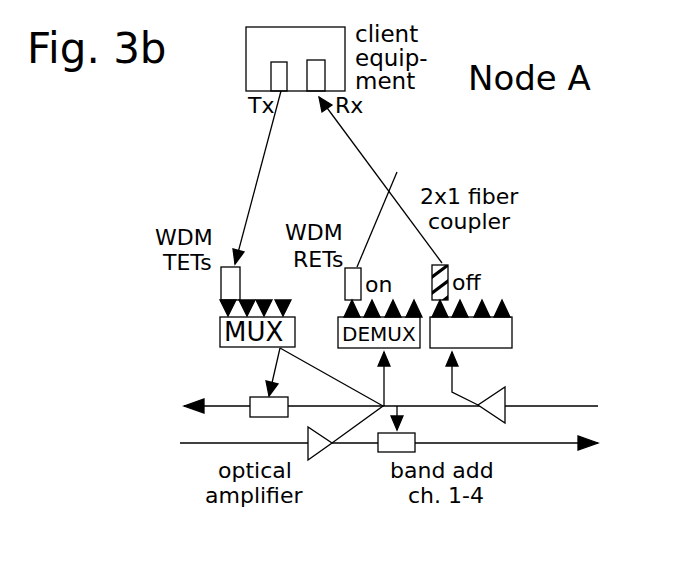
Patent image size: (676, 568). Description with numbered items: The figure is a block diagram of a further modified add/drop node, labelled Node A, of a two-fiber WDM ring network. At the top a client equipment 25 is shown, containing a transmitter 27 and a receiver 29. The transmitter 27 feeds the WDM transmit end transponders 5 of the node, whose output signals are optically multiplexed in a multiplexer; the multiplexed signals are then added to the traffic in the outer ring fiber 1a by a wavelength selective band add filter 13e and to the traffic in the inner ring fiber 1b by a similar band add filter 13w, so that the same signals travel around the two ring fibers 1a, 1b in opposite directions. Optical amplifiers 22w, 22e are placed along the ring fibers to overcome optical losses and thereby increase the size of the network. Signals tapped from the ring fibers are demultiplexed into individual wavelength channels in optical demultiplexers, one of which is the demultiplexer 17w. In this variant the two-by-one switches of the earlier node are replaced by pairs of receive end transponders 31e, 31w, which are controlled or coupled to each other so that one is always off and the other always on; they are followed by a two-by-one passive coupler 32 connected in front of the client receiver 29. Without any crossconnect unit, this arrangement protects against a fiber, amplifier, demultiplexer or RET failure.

The client equipment 25 is at (248, 83).
The transmitter 27 is at (284, 98).
The receiver 29 is at (318, 97).
The 2×1 passive coupler 32 is at (397, 172).
The WDM transmit end transponders 5 is at (221, 294).
The receive end transponder 31e is at (345, 296).
The receive end transponder 31w is at (447, 260).
The optical demultiplexer 17w is at (512, 325).
The optical amplifier 22w is at (506, 392).
The outer ring fiber 1a is at (592, 405).
The inner ring fiber 1b is at (546, 446).
The band add filter 13e is at (250, 397).
The optical amplifier 22e is at (330, 447).
The band add filter 13w is at (380, 452).